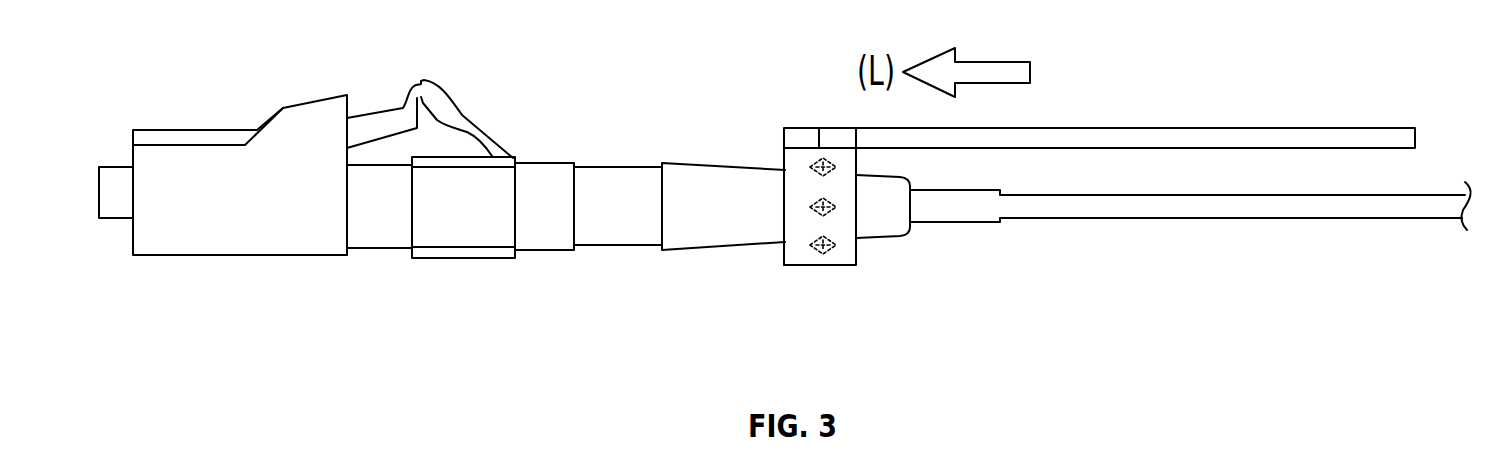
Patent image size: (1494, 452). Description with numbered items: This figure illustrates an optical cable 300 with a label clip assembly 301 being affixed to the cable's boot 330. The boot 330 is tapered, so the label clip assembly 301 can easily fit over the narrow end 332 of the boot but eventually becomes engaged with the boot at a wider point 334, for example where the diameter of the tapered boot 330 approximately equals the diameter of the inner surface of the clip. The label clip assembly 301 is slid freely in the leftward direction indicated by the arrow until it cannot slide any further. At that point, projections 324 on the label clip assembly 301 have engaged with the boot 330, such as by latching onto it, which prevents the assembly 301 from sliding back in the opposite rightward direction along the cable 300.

The optical cable 300 is at (300, 52).
The label clip assembly 301 is at (849, 285).
The projections 324 is at (818, 250).
The boot 330 is at (676, 156).
The narrow end 332 is at (912, 215).
The wider point 334 is at (784, 208).